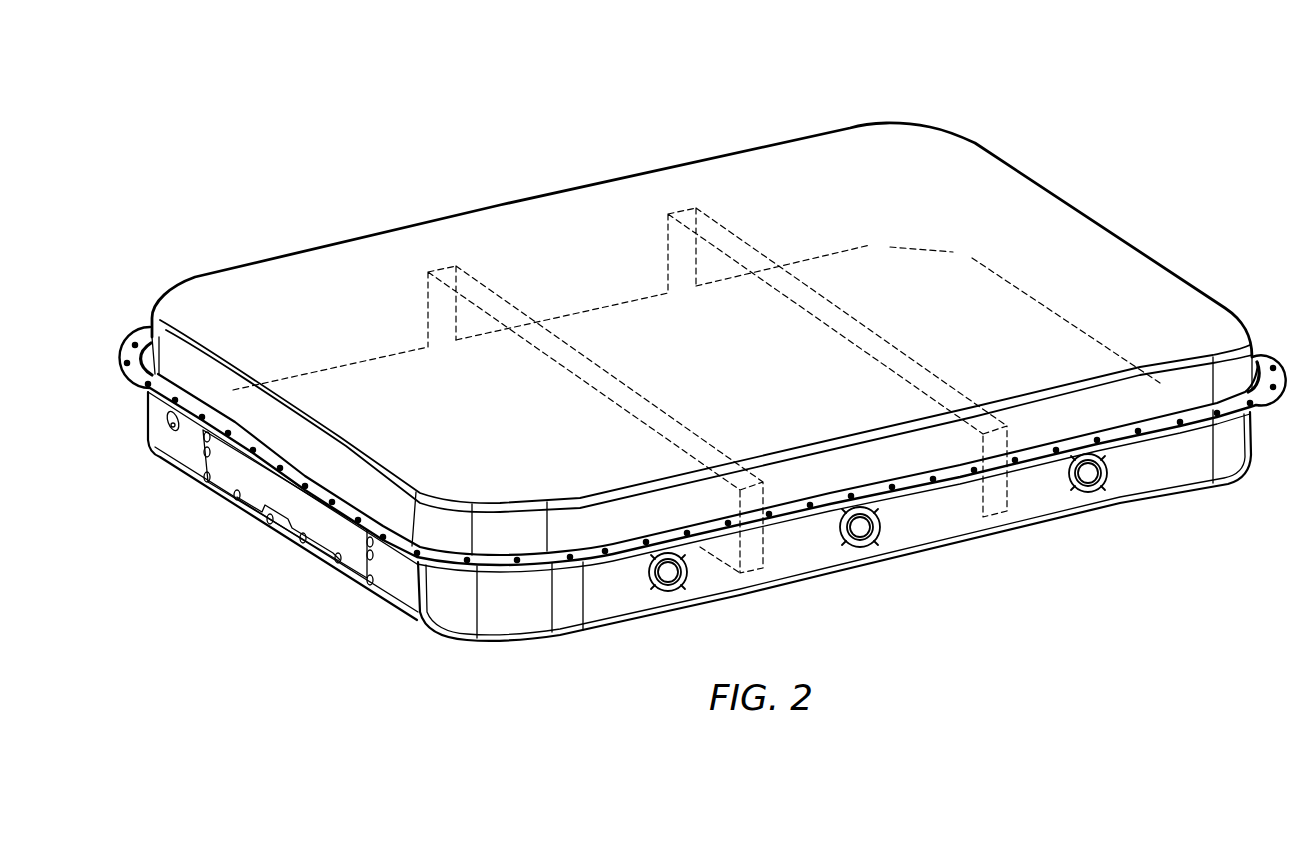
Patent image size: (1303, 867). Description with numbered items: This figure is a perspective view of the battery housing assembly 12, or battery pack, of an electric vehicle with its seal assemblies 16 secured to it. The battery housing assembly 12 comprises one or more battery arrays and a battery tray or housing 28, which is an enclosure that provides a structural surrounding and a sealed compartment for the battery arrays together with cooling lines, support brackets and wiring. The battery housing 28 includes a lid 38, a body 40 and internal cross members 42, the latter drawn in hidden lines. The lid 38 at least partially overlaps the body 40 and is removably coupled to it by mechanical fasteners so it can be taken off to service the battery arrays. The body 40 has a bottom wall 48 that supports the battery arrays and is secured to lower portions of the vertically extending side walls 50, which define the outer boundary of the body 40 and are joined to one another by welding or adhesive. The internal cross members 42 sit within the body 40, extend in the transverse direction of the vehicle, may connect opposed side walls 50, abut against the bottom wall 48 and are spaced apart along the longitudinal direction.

The battery housing assembly 12 is at (692, 78).
The seal assemblies 16 is at (687, 567).
The battery tray or housing 28 is at (702, 324).
The lid 38 is at (577, 228).
The body 40 is at (415, 604).
The internal cross members 42 is at (452, 308).
The bottom wall 48 is at (348, 405).
The side walls 50 is at (395, 568).